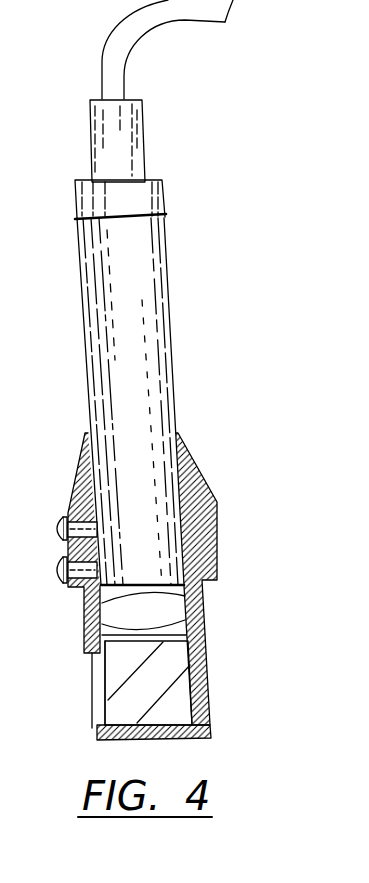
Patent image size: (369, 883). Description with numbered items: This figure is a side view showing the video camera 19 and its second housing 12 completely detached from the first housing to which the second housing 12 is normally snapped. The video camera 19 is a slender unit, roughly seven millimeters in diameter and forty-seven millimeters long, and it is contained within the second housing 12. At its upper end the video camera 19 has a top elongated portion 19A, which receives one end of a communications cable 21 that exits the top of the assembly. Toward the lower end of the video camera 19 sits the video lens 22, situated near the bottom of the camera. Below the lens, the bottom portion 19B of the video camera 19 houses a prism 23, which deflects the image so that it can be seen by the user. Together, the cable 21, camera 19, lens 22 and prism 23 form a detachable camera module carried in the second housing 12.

The second housing 12 is at (77, 471).
The video camera 19 is at (83, 302).
The top elongated portion 19A is at (125, 149).
The bottom portion 19B is at (140, 357).
The communications cable 21 is at (168, 20).
The video lens 22 is at (115, 613).
The prism 23 is at (115, 671).